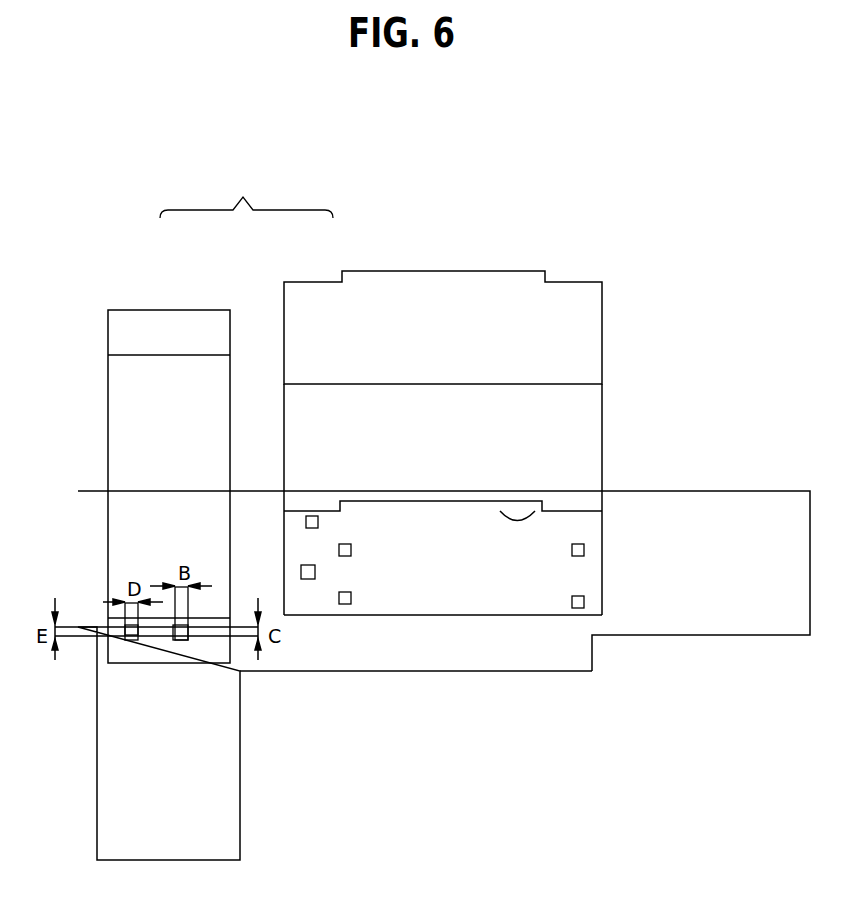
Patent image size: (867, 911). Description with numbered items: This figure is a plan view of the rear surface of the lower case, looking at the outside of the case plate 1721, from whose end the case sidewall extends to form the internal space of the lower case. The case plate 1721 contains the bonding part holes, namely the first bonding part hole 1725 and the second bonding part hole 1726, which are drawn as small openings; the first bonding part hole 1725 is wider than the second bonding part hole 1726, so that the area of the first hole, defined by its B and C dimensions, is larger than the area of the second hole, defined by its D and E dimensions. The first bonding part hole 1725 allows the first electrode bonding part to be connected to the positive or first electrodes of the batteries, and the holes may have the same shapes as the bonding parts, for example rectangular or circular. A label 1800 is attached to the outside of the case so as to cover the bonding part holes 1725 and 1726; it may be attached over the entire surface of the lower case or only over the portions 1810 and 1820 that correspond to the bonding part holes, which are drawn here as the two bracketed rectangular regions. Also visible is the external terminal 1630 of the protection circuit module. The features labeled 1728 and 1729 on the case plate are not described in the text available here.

The label 1800 is at (243, 197).
The portion 1810 is at (306, 292).
The portion 1820 is at (177, 322).
The case plate 1721 is at (653, 505).
The first bonding part hole 1725 is at (352, 549).
The second bonding part hole 1726 is at (318, 520).
The notch 1728 is at (533, 506).
The lower frame portion 1729 is at (191, 660).
The external terminal 1630 is at (516, 672).